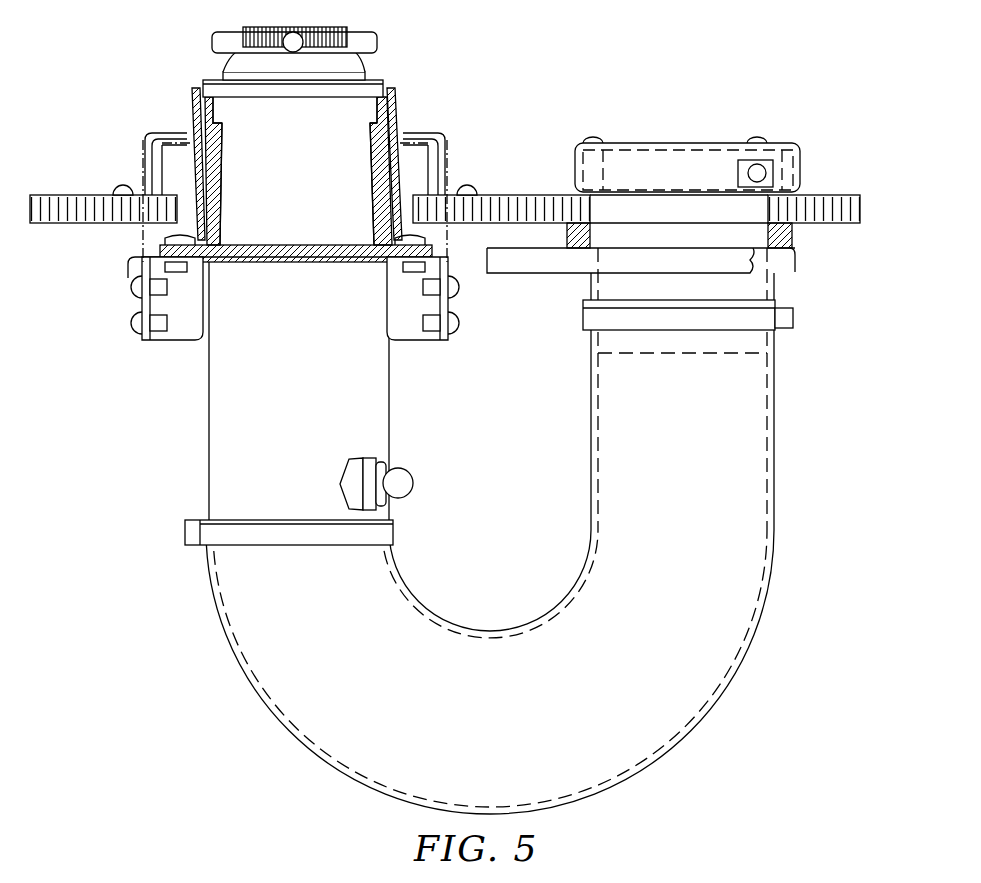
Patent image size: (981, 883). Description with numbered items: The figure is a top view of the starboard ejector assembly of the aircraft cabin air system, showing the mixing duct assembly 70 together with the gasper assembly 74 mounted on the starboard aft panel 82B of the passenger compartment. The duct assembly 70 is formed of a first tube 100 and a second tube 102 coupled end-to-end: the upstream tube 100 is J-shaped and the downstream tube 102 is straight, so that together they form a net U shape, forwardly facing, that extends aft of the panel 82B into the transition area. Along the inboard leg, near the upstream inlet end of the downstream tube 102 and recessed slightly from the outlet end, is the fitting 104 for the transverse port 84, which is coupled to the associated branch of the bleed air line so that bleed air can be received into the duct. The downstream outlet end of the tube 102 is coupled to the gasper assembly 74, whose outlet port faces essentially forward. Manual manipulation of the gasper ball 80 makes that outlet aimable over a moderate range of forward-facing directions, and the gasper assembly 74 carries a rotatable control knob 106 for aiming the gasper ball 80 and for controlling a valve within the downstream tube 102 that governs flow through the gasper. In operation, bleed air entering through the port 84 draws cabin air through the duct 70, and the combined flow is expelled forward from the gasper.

The mixing duct assembly 70 is at (728, 590).
The gasper assembly 74 is at (395, 62).
The gasper ball 80 is at (355, 64).
The starboard aft panel 82B is at (825, 208).
The transverse port 84 is at (397, 447).
The first tube 100 is at (764, 441).
The second tube 102 is at (220, 429).
The fitting 104 is at (400, 507).
The rotatable control knob 106 is at (382, 30).